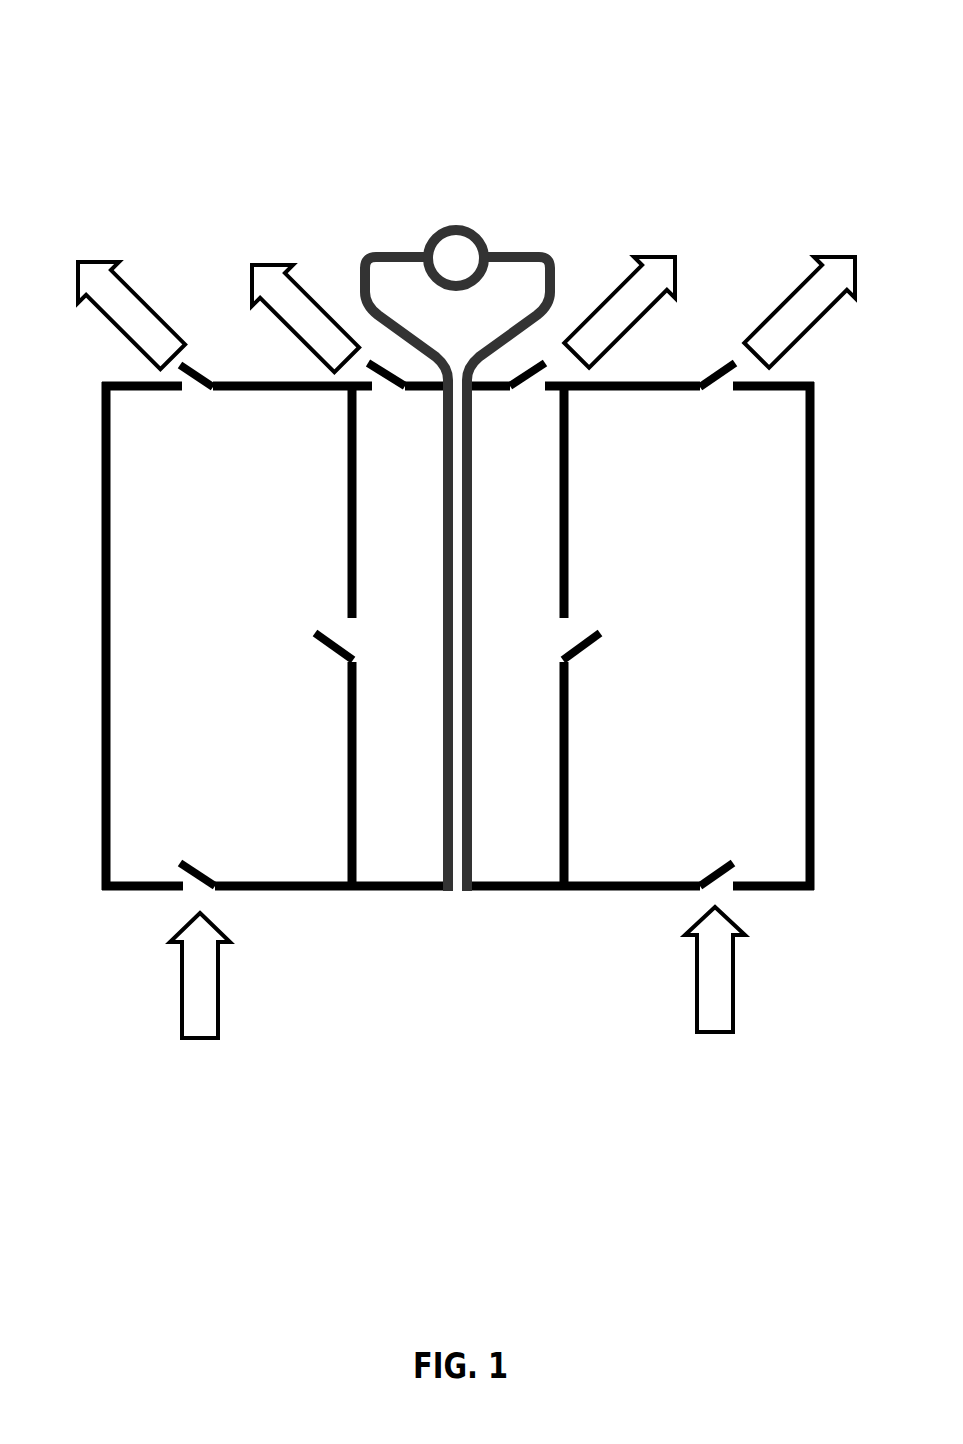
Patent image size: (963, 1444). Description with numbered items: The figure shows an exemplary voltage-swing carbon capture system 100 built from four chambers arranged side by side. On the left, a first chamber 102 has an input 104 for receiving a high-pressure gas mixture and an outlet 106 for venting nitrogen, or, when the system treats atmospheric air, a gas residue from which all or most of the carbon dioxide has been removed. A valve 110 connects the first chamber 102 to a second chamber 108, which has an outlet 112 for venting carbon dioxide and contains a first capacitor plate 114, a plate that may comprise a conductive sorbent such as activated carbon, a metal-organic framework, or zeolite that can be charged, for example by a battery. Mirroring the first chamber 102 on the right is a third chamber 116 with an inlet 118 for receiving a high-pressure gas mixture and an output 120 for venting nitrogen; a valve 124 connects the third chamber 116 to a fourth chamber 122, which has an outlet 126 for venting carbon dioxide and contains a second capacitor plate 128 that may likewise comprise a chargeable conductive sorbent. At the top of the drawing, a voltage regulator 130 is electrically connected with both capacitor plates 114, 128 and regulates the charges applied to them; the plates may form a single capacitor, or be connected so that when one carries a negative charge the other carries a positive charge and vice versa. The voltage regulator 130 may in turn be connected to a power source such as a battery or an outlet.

The voltage-swing carbon capture system 100 is at (110, 66).
The first chamber 102 is at (280, 892).
The input 104 is at (210, 852).
The outlet 106 is at (208, 431).
The second chamber 108 is at (395, 891).
The valve 110 is at (397, 651).
The outlet 112 is at (415, 425).
The first capacitor plate 114 is at (445, 892).
The third chamber 116 is at (632, 892).
The inlet 118 is at (737, 851).
The output 120 is at (725, 429).
The fourth chamber 122 is at (532, 892).
The valve 124 is at (553, 651).
The outlet 126 is at (538, 425).
The second capacitor plate 128 is at (467, 892).
The voltage regulator 130 is at (477, 269).